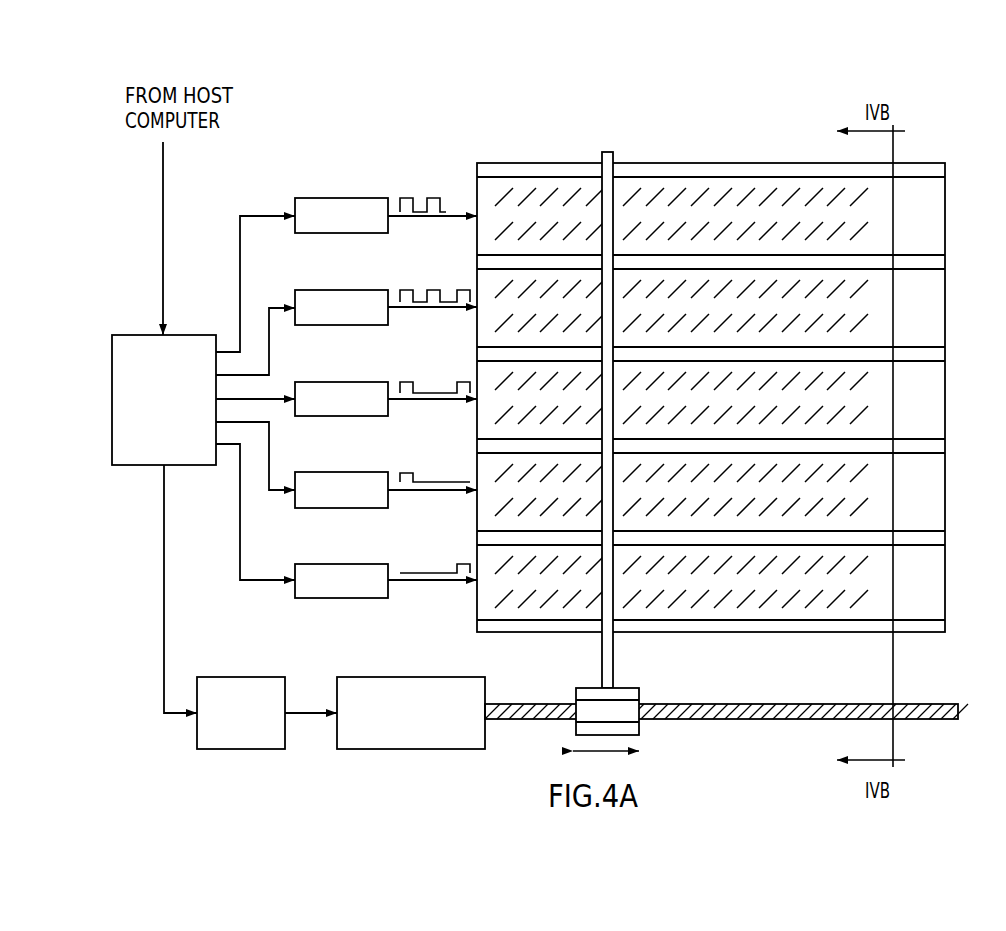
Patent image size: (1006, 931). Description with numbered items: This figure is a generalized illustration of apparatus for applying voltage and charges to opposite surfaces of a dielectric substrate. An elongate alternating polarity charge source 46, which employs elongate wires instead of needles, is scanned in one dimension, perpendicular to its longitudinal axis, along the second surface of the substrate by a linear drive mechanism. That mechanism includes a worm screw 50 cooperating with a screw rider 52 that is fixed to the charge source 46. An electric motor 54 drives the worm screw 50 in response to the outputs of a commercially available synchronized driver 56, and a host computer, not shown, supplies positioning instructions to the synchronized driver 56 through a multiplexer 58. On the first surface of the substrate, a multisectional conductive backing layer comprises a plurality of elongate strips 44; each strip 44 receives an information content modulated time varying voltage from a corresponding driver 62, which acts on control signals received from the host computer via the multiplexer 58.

The elongate strips 44 is at (708, 283).
The elongate alternating polarity charge source 46 is at (613, 152).
The worm screw 50 is at (760, 703).
The screw rider 52 is at (638, 687).
The electric motor 54 is at (388, 677).
The synchronized driver 56 is at (247, 677).
The multiplexer 58 is at (188, 335).
The driver 62 is at (320, 233).